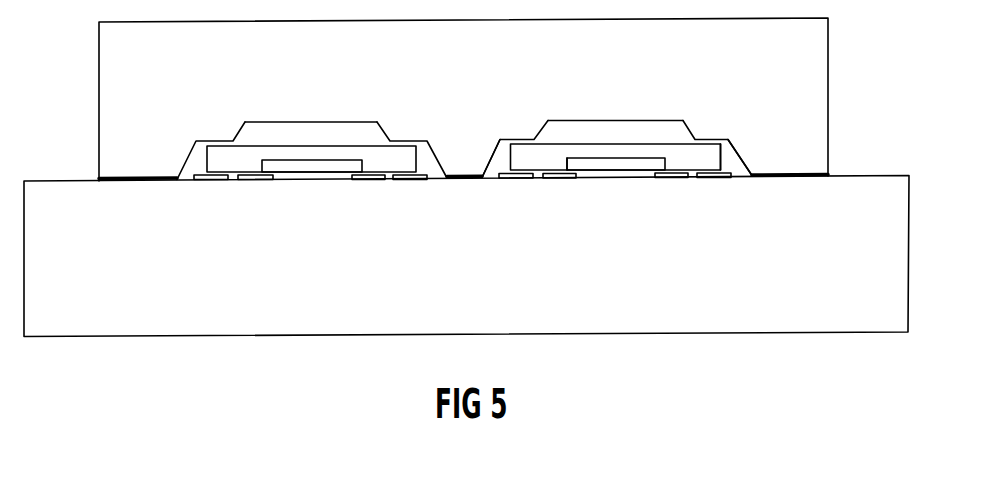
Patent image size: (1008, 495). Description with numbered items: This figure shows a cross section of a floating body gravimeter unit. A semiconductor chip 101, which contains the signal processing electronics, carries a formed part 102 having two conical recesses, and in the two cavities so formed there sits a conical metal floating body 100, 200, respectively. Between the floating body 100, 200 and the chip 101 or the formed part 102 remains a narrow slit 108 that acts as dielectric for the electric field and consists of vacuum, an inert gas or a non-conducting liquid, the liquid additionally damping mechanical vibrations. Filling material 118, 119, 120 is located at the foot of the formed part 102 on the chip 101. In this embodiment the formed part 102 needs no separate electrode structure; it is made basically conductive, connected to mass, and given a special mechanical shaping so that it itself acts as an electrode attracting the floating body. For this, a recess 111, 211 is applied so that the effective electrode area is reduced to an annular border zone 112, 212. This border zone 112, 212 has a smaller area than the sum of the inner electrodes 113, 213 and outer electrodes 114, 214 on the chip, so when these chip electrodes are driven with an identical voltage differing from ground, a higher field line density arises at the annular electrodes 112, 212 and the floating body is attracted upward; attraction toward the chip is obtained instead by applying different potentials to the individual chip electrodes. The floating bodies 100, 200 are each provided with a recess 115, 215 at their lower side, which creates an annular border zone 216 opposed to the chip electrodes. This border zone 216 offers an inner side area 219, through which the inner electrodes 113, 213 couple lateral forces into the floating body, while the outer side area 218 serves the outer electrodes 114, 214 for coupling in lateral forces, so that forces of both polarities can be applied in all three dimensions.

The floating body 100 is at (217, 157).
The semiconductor chip 101 is at (691, 333).
The formed part 102 is at (822, 90).
The slit 108 is at (730, 160).
The recess 111 is at (312, 128).
The annular border zone 112 is at (227, 140).
The inner electrode 113 is at (261, 180).
The outer electrode 114 is at (212, 180).
The recess 115 is at (305, 163).
The filling material 118 is at (133, 182).
The filling material 119 is at (463, 175).
The filling material 120 is at (800, 177).
The floating body 200 is at (528, 153).
The recess 211 is at (620, 128).
The annular border zone 212 is at (535, 137).
The inner electrode 213 is at (562, 178).
The outer electrode 214 is at (520, 178).
The recess 215 is at (612, 160).
The annular border zone 216 is at (688, 160).
The outer side area 218 is at (505, 157).
The inner side area 219 is at (572, 157).